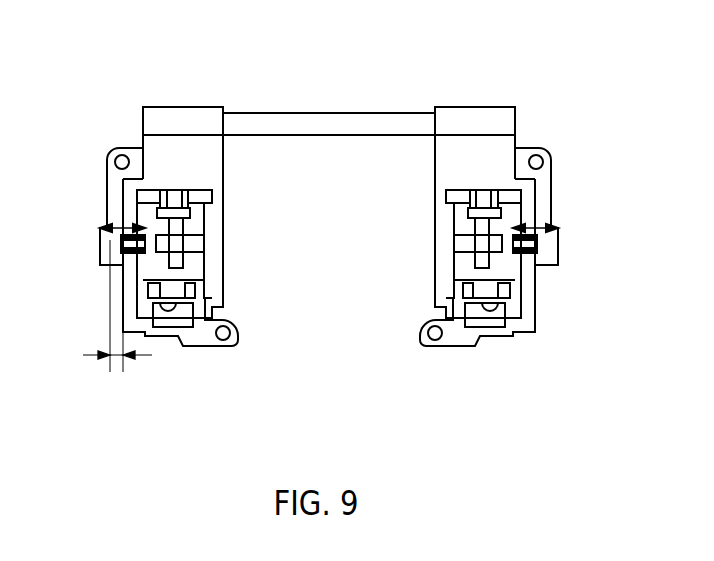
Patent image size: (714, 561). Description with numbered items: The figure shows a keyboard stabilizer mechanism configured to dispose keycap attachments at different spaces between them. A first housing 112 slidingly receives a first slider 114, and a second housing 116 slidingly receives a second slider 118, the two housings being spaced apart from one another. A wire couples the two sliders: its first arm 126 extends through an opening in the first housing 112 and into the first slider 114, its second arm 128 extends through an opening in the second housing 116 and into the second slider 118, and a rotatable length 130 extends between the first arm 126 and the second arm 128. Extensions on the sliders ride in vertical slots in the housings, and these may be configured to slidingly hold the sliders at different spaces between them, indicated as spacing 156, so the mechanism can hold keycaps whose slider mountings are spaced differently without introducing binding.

The first housing 112 is at (535, 317).
The first slider 114 is at (467, 268).
The second housing 116 is at (224, 265).
The second slider 118 is at (158, 270).
The first arm 126 is at (525, 202).
The second arm 128 is at (172, 201).
The rotatable length 130 is at (318, 127).
The spacing 156 is at (119, 362).